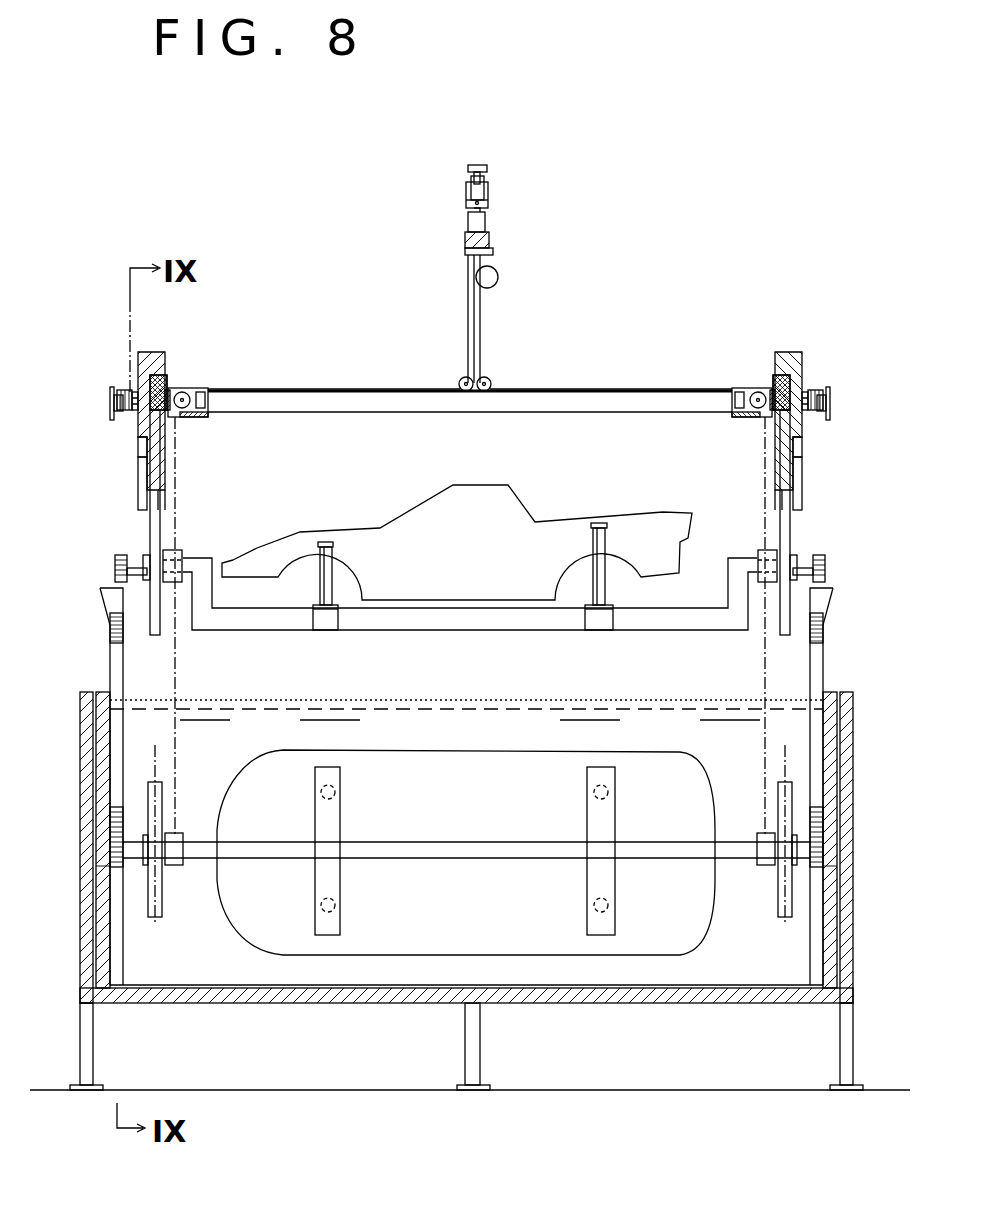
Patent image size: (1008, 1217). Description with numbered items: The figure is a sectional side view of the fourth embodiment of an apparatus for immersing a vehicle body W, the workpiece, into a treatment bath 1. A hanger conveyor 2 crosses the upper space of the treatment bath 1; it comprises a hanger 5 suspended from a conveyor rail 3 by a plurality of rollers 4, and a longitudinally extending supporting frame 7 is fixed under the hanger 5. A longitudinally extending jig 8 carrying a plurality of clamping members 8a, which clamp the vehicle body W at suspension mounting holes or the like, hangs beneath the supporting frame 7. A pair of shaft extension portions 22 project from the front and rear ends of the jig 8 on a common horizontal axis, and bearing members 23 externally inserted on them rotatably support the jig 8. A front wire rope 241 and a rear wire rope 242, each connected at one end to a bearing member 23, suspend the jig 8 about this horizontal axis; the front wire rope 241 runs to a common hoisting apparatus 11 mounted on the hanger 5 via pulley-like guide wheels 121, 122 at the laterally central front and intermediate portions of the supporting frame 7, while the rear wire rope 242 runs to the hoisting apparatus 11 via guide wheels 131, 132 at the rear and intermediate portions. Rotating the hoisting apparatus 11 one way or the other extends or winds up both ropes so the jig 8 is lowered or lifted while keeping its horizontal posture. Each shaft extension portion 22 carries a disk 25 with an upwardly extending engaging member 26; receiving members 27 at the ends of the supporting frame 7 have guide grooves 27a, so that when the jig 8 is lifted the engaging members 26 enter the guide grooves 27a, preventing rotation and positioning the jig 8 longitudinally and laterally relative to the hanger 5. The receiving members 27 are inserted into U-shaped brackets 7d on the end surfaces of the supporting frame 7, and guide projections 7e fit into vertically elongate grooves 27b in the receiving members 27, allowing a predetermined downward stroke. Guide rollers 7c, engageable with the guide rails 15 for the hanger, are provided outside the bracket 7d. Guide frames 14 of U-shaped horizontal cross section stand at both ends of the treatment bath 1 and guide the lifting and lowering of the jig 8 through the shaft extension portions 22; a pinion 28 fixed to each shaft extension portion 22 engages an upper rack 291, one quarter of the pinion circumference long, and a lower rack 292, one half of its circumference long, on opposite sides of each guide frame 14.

The treatment bath 1 is at (322, 1000).
The hanger conveyor 2 is at (488, 158).
The conveyor rail 3 is at (468, 170).
The rollers 4 is at (466, 186).
The hanger 5 is at (468, 292).
The supporting frame 7 is at (380, 412).
The guide rollers 7c is at (124, 392).
The U-shaped brackets 7d is at (137, 390).
The guide projections 7e is at (170, 385).
The jig 8 is at (472, 630).
The clamping members 8a is at (325, 542).
The hoisting apparatus 11 is at (498, 278).
The guide wheel 121 is at (177, 388).
The guide wheel 122 is at (460, 376).
The guide wheel 131 is at (750, 388).
The guide wheel 132 is at (490, 375).
The guide frames 14 is at (108, 630).
The guide rails 15 is at (108, 400).
The shaft extension portions 22 is at (133, 563).
The bearing members 23 is at (173, 550).
The front wire rope 241 is at (342, 388).
The rear wire rope 242 is at (595, 388).
The disk 25 is at (156, 610).
The engaging member 26 is at (138, 480).
The receiving members 27 is at (155, 430).
The guide grooves 27a is at (143, 442).
The vertically elongate grooves 27b is at (165, 380).
The pinion 28 is at (113, 572).
The upper rack 291 is at (125, 640).
The lower rack 292 is at (118, 867).
The vehicle body W is at (468, 518).